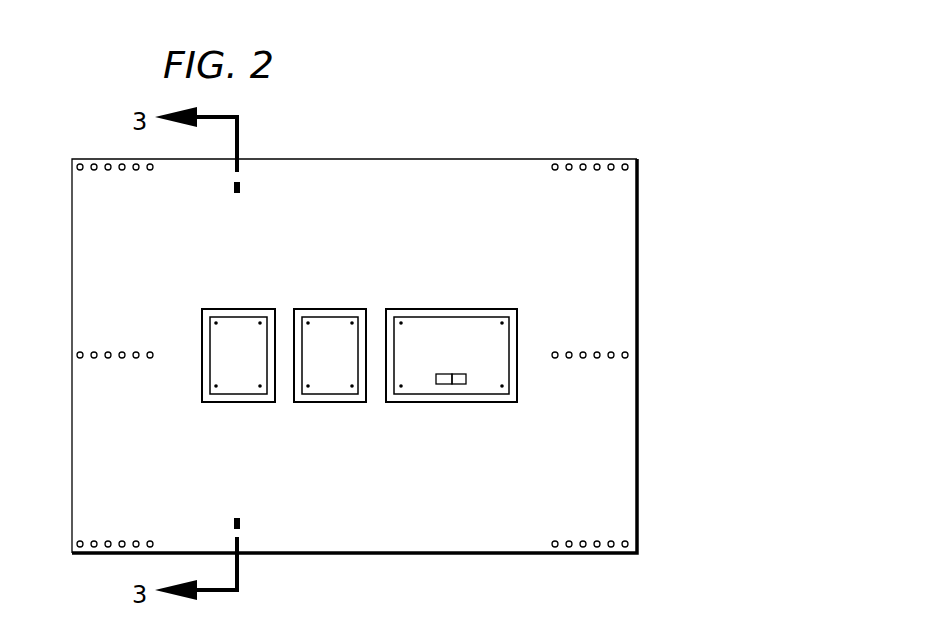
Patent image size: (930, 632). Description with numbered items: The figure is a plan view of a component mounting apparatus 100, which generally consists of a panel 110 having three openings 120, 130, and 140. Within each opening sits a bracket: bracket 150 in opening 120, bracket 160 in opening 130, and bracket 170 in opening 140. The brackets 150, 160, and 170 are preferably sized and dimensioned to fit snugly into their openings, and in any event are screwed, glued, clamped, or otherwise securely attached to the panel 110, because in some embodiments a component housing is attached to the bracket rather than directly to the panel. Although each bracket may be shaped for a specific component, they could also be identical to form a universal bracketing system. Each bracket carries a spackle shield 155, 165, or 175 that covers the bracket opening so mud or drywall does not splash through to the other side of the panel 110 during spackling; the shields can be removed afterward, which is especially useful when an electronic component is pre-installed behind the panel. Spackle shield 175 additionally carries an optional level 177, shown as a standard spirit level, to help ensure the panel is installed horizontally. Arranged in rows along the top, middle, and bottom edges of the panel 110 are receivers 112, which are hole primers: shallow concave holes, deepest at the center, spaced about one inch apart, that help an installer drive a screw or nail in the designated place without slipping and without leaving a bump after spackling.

The component mounting apparatus 100 is at (670, 162).
The panel 110 is at (622, 263).
The receivers 112 is at (626, 541).
The opening 120 is at (192, 371).
The opening 130 is at (354, 298).
The opening 140 is at (482, 296).
The bracket 150 is at (202, 337).
The spackle shield 155 is at (242, 372).
The bracket 160 is at (323, 308).
The spackle shield 165 is at (330, 373).
The bracket 170 is at (438, 308).
The spackle shield 175 is at (419, 372).
The level 177 is at (457, 384).